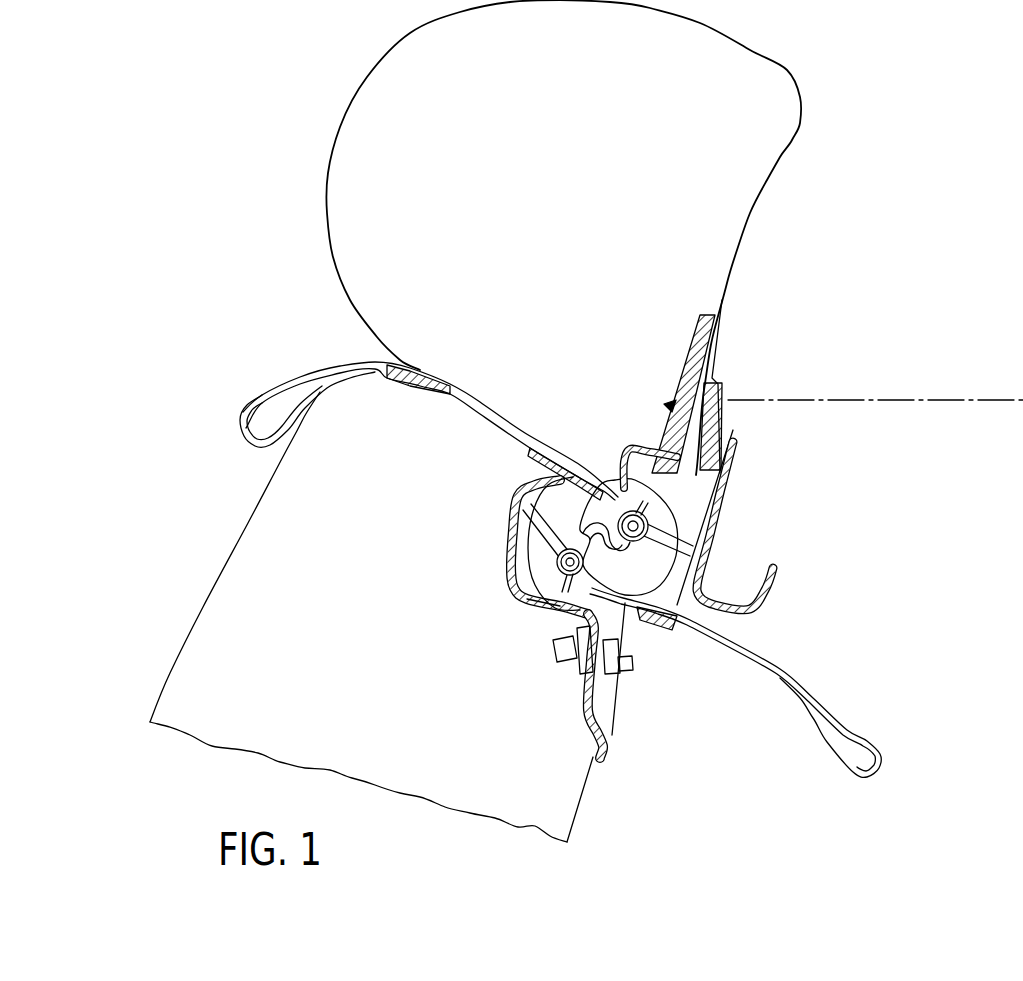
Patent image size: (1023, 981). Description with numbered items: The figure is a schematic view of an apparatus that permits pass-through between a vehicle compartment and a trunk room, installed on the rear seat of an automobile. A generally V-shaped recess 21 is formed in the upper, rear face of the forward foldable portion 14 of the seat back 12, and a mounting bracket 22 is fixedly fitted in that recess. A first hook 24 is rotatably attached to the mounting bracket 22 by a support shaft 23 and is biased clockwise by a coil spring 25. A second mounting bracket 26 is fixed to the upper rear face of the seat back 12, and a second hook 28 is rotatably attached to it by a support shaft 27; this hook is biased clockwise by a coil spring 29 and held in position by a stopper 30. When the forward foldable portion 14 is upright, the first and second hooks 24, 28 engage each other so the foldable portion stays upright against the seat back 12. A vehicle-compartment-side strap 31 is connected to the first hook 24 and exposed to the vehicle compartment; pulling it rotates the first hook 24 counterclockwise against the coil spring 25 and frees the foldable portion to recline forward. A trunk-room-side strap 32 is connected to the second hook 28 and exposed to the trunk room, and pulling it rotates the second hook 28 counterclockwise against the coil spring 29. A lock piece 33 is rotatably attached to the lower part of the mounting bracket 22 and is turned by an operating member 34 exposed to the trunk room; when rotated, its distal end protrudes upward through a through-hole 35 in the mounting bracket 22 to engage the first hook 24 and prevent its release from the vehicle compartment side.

The seat back 12 is at (790, 122).
The forward foldable portion 14 is at (185, 665).
The V-shaped recess 21 is at (510, 548).
The mounting bracket 22 is at (530, 608).
The support shaft 23 is at (525, 597).
The first hook 24 is at (530, 572).
The coil spring 25 is at (530, 510).
The mounting bracket 26 is at (708, 506).
The support shaft 27 is at (617, 505).
The second hook 28 is at (652, 563).
The coil spring 29 is at (690, 530).
The stopper 30 is at (662, 463).
The vehicle-compartment-side strap 31 is at (262, 390).
The trunk-room-side strap 32 is at (866, 736).
The lock piece 33 is at (567, 656).
The operating member 34 is at (627, 671).
The through-hole 35 is at (625, 637).